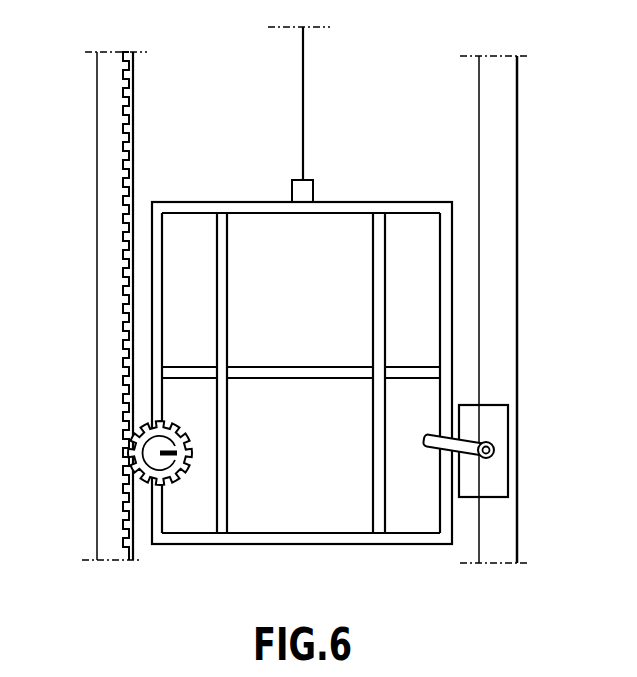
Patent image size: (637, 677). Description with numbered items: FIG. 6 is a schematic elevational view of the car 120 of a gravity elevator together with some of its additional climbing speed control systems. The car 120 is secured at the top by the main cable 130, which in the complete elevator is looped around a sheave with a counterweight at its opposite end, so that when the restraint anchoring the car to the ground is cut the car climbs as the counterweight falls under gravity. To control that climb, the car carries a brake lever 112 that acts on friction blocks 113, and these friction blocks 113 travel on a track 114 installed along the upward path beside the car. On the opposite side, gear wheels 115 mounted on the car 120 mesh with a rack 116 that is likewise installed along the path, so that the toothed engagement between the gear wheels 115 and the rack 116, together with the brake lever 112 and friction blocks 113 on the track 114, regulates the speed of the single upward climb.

The brake lever 112 is at (428, 438).
The friction blocks 113 is at (493, 428).
The track 114 is at (500, 243).
The gear wheels 115 is at (125, 465).
The rack 116 is at (107, 323).
The car 120 is at (335, 235).
The main cable 130 is at (302, 78).